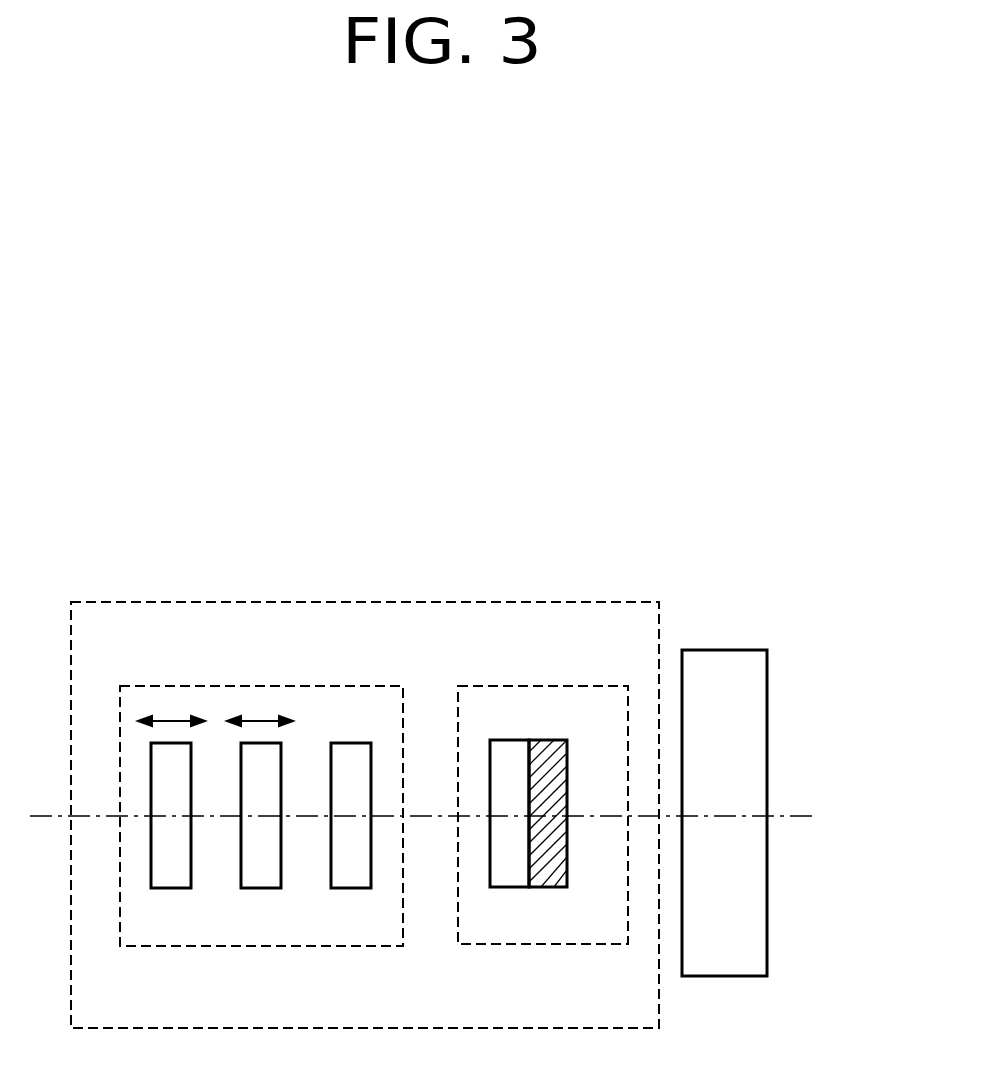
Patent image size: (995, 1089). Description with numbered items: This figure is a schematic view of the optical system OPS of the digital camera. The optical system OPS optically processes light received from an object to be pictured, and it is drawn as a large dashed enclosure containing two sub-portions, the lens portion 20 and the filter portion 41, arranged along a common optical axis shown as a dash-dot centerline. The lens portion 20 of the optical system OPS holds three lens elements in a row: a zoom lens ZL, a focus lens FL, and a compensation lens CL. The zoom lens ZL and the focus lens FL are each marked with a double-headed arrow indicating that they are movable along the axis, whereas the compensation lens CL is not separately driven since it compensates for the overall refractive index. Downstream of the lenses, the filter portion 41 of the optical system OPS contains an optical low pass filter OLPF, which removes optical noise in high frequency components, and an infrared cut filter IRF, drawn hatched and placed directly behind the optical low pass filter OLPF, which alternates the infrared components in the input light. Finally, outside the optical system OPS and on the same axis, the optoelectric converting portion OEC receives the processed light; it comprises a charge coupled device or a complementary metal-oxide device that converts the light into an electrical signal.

The optical system OPS is at (365, 602).
The lens portion 20 is at (262, 686).
The filter portion 41 is at (547, 686).
The zoom lens ZL is at (170, 888).
The focus lens FL is at (262, 888).
The compensation lens CL is at (348, 888).
The optical low pass filter OLPF is at (503, 887).
The infrared cut filter IRF is at (552, 887).
The optoelectric converting portion OEC is at (725, 650).